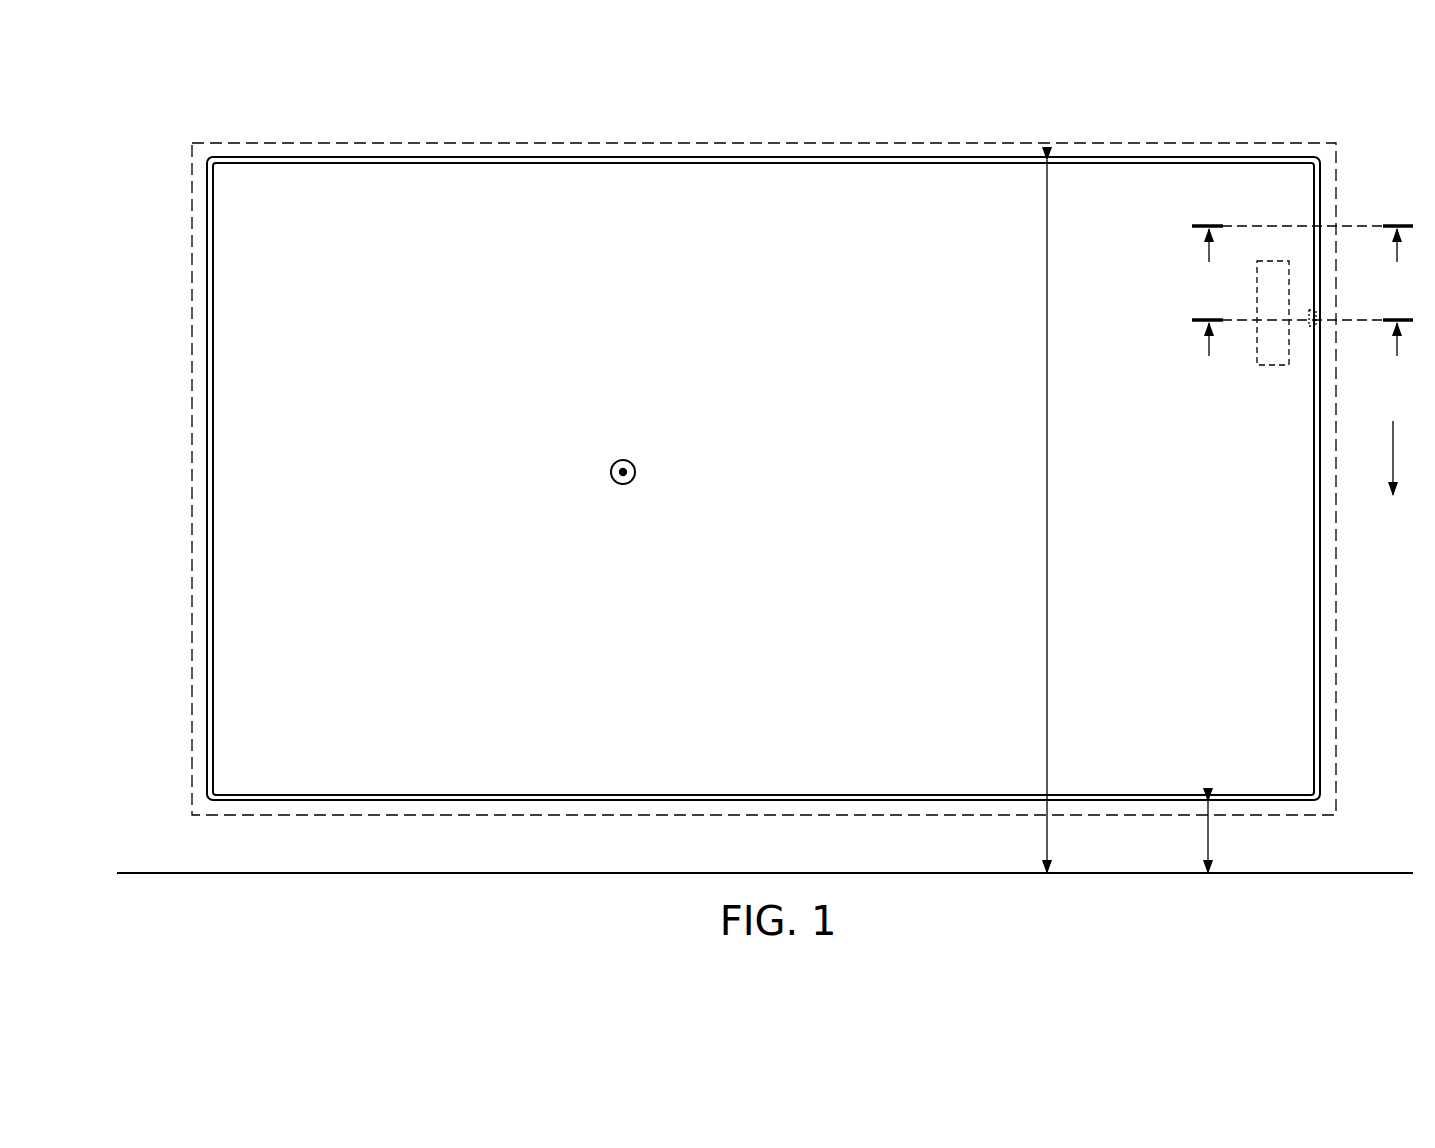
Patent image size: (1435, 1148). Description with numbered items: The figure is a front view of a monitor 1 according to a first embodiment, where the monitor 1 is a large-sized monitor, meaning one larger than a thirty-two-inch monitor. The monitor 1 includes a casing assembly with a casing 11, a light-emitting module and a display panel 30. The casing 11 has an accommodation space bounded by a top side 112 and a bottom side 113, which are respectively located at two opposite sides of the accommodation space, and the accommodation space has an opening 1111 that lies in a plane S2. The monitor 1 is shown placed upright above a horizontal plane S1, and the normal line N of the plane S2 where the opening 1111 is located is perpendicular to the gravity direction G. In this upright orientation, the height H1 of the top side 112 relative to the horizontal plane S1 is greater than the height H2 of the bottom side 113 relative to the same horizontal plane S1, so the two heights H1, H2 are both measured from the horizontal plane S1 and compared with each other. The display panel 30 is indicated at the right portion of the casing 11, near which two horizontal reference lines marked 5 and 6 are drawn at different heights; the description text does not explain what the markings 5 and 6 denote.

The monitor 1 is at (280, 89).
The casing 11 is at (1273, 158).
The top side 112 is at (1111, 156).
The opening 1111 is at (1193, 160).
The bottom side 113 is at (1097, 816).
The display panel 30 is at (1262, 583).
The first height position 5 is at (1302, 353).
The second height position 6 is at (1302, 259).
The normal line N is at (628, 461).
The gravity direction G is at (1406, 458).
The height of the top side H1 is at (1068, 516).
The height of the bottom side H2 is at (1228, 837).
The horizontal plane S1 is at (1384, 872).
The plane S2 is at (986, 142).